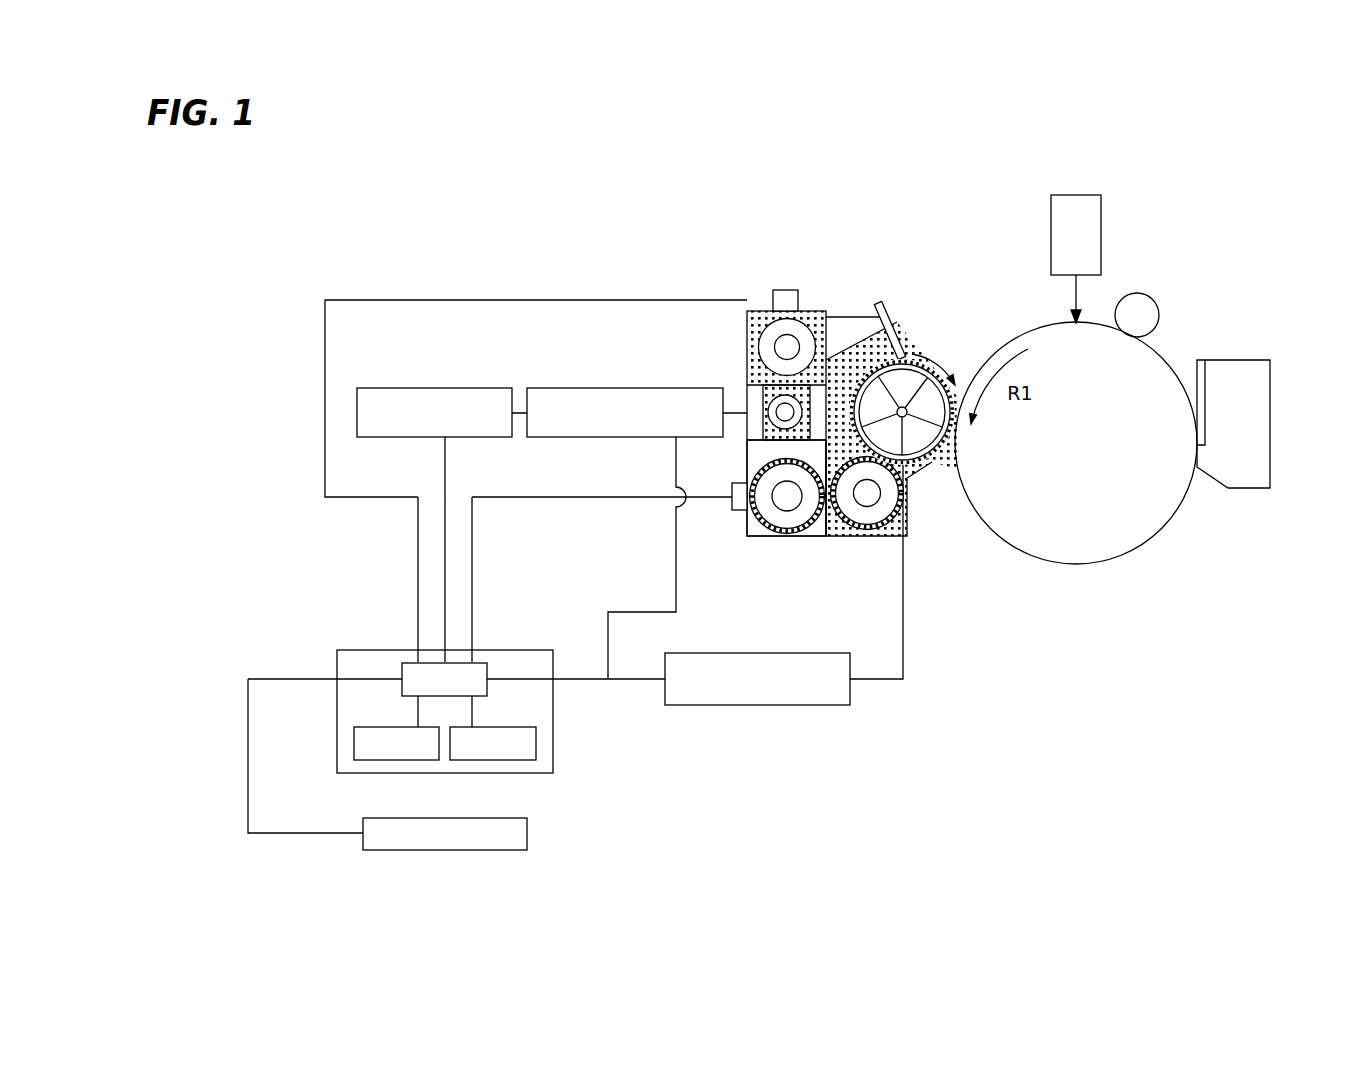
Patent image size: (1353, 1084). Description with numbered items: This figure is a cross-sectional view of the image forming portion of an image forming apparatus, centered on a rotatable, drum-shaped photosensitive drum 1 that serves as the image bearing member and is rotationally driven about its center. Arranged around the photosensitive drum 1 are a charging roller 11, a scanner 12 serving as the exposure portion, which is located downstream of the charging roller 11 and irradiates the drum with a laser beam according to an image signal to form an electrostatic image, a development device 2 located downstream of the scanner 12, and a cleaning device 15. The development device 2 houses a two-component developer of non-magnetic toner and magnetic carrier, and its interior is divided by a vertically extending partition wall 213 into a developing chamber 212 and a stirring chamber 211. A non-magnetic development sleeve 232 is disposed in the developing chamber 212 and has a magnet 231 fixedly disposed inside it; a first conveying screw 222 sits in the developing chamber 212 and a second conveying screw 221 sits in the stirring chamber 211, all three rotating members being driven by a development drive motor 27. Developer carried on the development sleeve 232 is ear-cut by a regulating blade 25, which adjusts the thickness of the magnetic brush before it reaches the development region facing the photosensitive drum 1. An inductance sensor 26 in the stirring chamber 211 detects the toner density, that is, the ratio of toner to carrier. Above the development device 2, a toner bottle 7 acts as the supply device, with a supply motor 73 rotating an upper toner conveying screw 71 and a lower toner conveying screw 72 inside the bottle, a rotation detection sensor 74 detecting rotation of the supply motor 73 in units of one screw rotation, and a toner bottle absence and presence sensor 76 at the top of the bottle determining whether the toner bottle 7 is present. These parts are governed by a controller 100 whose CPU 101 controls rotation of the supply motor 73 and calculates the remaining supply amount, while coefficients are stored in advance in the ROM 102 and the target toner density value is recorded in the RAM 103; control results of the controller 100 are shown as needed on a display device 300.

The photosensitive drum 1 is at (1120, 563).
The development device 2 is at (871, 283).
The toner bottle 7 is at (805, 252).
The charging roller 11 is at (1142, 298).
The scanner 12 is at (1077, 207).
The cleaning device 15 is at (1220, 380).
The regulating blade 25 is at (887, 315).
The inductance sensor 26 is at (736, 511).
The development drive motor 27 is at (822, 705).
The upper toner conveying screw 71 is at (778, 348).
The lower toner conveying screw 72 is at (782, 410).
The supply motor 73 is at (435, 388).
The rotation detection sensor 74 is at (605, 388).
The toner bottle absence and presence sensor 76 is at (785, 295).
The controller 100 is at (363, 650).
The CPU 101 is at (487, 668).
The ROM 102 is at (537, 745).
The RAM 103 is at (354, 742).
The stirring chamber 211 is at (760, 537).
The developing chamber 212 is at (897, 538).
The partition wall 213 is at (820, 537).
The second conveying screw 221 is at (785, 495).
The first conveying screw 222 is at (866, 508).
The magnet 231 is at (938, 470).
The development sleeve 232 is at (912, 355).
The display device 300 is at (438, 851).